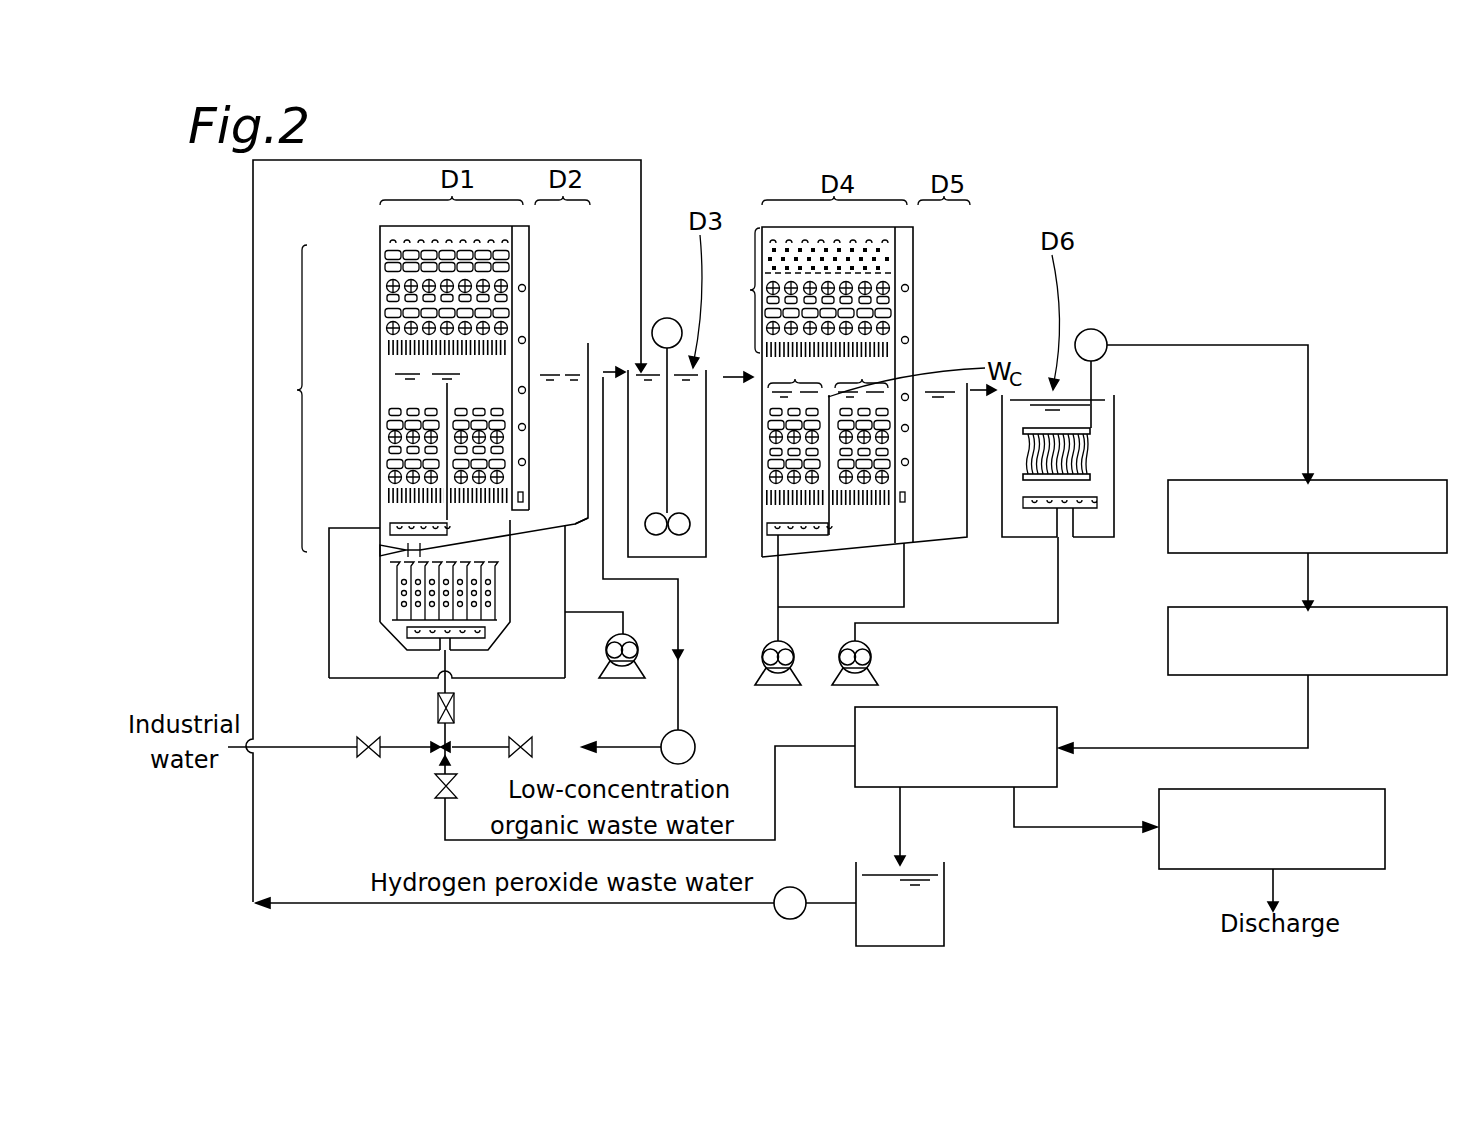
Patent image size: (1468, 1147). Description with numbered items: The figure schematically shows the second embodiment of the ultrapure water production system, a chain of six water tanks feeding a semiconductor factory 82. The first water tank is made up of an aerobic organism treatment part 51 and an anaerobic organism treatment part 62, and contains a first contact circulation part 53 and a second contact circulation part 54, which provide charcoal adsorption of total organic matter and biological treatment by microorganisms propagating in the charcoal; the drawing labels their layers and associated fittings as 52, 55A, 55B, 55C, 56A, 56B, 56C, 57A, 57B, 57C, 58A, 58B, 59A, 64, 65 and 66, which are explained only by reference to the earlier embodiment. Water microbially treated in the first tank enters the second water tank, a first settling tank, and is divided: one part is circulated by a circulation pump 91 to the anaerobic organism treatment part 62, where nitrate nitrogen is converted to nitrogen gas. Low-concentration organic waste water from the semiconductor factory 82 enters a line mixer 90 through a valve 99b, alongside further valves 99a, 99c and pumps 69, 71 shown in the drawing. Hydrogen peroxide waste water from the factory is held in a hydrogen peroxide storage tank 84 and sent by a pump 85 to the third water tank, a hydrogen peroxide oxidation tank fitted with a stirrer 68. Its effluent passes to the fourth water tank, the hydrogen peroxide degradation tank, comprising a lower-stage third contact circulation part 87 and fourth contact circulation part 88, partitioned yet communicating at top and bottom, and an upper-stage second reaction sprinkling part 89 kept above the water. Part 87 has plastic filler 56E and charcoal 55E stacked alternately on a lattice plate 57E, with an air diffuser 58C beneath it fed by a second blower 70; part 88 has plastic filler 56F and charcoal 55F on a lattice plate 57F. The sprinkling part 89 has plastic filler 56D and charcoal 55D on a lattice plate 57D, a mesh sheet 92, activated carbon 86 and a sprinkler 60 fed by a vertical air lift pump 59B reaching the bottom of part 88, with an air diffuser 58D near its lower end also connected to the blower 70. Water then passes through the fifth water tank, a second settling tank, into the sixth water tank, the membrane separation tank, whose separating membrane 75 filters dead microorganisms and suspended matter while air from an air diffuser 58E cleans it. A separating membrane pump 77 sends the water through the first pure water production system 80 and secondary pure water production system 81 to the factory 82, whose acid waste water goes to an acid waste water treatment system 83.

The aerobic organism treatment part 51 is at (288, 398).
The reaction tank 52 is at (375, 264).
The first contact circulation part 53 is at (413, 402).
The second contact circulation part 54 is at (481, 402).
The cation exchange resin layer 55A is at (386, 313).
The cation exchange resin layer 55B is at (387, 423).
The cation exchange resin layer 55C is at (508, 414).
The charcoal 55D is at (891, 313).
The charcoal 55E is at (768, 430).
The charcoal 55F is at (890, 412).
The anion exchange resin layer 56A is at (386, 286).
The anion exchange resin layer 56B is at (387, 476).
The anion exchange resin layer 56C is at (508, 452).
The plastic filler 56D is at (891, 328).
The plastic filler 56E is at (768, 433).
The plastic filler 56F is at (890, 440).
The filter layer 57A is at (386, 348).
The filter layer 57B is at (387, 500).
The filter layer 57C is at (512, 508).
The lattice plate 57D is at (891, 350).
The lattice plate 57E is at (768, 494).
The lattice plate 57F is at (862, 506).
The water distributor 58A is at (448, 528).
The outlet port 58B is at (524, 497).
The air diffuser 58C is at (806, 537).
The air diffuser 58D is at (906, 497).
The air diffuser 58E is at (1073, 512).
The perforated partition plate 59A is at (530, 302).
The air lift pump 59B is at (913, 283).
The sprinkler 60 is at (413, 232).
The anaerobic organism treatment part 62 is at (373, 612).
The heat exchanger 64 is at (496, 602).
The water distributor 65 is at (487, 638).
The valve 66 is at (381, 551).
The stirrer 68 is at (667, 318).
The pump 69 is at (623, 636).
The second blower 70 is at (762, 650).
The pump 71 is at (872, 656).
The separating membrane 75 is at (1093, 447).
The separating membrane pump 77 is at (1106, 334).
The first pure water production system 80 is at (1410, 480).
The secondary pure water production system 81 is at (1410, 607).
The semiconductor factory 82 is at (1042, 707).
The acid waste water treatment system 83 is at (1330, 789).
The hydrogen peroxide storage tank 84 is at (946, 905).
The pump 85 is at (795, 887).
The activated carbon 86 is at (888, 257).
The third contact circulation part 87 is at (798, 444).
The fourth contact circulation part 88 is at (861, 371).
The second reaction sprinkling part 89 is at (737, 290).
The line mixer 90 is at (438, 708).
The circulation pump 91 is at (695, 742).
The mesh sheet 92 is at (896, 273).
The valve 99a is at (368, 735).
The valve 99b is at (435, 786).
The valve 99c is at (530, 736).